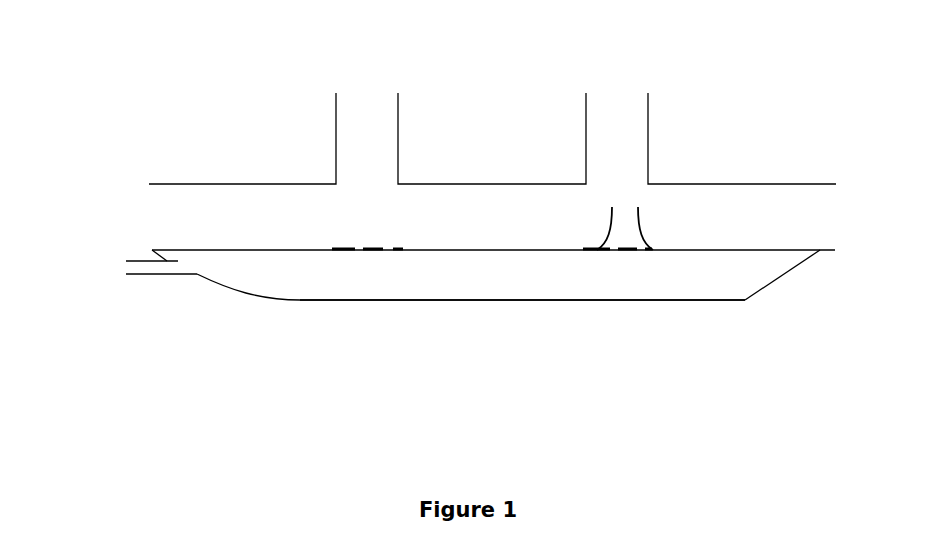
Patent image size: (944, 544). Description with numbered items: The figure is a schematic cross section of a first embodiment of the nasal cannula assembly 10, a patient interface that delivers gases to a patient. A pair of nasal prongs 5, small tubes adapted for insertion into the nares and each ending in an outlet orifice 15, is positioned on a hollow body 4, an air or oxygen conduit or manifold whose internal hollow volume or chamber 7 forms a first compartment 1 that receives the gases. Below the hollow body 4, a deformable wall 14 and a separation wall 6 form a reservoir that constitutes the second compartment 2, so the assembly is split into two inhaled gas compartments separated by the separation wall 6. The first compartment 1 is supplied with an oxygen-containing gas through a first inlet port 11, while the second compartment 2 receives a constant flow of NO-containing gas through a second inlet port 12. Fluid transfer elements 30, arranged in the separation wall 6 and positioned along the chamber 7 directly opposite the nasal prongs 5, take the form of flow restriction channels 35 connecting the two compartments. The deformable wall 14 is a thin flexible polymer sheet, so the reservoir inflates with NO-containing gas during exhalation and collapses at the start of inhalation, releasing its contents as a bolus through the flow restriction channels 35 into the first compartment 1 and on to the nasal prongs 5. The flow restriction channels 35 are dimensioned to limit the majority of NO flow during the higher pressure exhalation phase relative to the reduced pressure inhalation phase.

The first compartment 1 is at (465, 219).
The second compartment 2 is at (472, 279).
The hollow body 4 is at (251, 166).
The nasal prongs 5 is at (406, 117).
The separation wall 6 is at (747, 252).
The internal hollow volume or chamber 7 is at (524, 201).
The nasal cannula assembly 10 is at (283, 334).
The first inlet port 11 is at (167, 219).
The second inlet port 12 is at (166, 275).
The deformable wall 14 is at (440, 304).
The outlet orifice 15 is at (370, 96).
The fluid transfer elements 30 is at (358, 257).
The flow restriction channel 35 is at (620, 223).